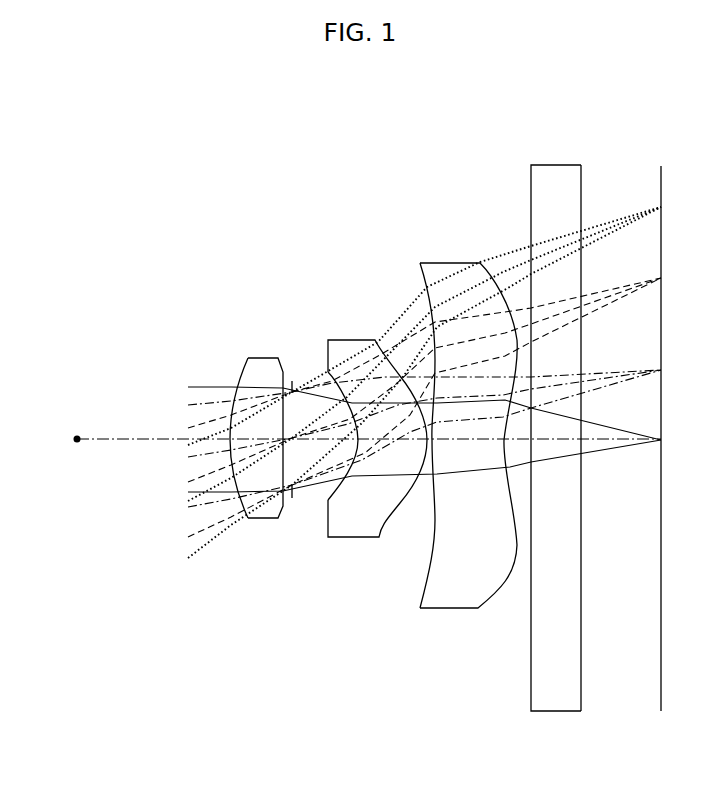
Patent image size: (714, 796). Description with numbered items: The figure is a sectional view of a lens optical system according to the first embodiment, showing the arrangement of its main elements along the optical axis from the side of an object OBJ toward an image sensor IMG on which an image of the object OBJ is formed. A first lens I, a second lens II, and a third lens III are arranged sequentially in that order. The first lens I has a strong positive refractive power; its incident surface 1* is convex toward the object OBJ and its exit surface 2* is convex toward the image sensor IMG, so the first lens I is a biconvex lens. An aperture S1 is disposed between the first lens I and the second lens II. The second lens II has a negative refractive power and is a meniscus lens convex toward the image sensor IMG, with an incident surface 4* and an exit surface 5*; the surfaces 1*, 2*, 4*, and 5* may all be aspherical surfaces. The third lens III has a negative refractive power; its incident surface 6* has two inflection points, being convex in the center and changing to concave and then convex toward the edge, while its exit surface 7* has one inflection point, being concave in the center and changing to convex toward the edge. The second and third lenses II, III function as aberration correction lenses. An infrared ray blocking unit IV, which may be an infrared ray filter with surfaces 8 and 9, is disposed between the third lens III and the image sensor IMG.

The object OBJ is at (77, 432).
The incident surface of the first lens 1 is at (242, 376).
The exit surface of the first lens 2 is at (280, 372).
The aperture S1 is at (293, 382).
The incident surface of the second lens 4 is at (340, 382).
The exit surface of the second lens 5 is at (382, 340).
The incident surface of the third lens 6 is at (424, 282).
The exit surface of the third lens 7 is at (486, 268).
The object-side surface of the infrared ray blocking unit 8 is at (531, 183).
The image-side surface of the infrared ray blocking unit 9 is at (581, 183).
The image sensor IMG is at (661, 180).
The first lens I is at (246, 451).
The second lens II is at (377, 442).
The third lens III is at (451, 443).
The infrared ray blocking unit IV is at (555, 452).